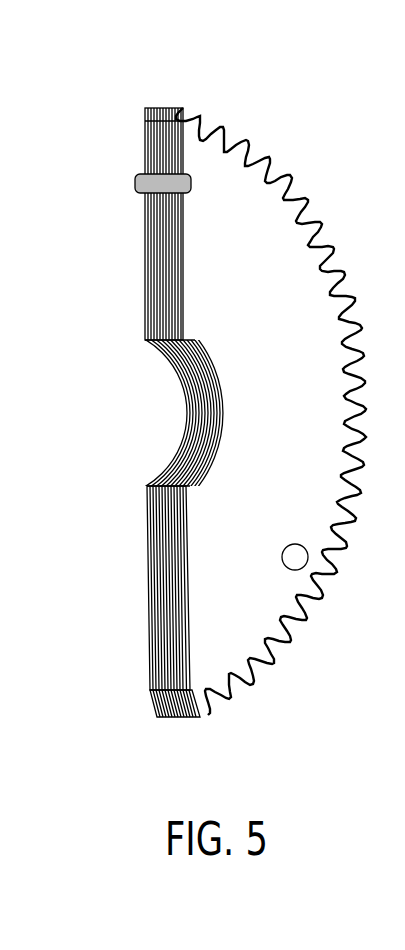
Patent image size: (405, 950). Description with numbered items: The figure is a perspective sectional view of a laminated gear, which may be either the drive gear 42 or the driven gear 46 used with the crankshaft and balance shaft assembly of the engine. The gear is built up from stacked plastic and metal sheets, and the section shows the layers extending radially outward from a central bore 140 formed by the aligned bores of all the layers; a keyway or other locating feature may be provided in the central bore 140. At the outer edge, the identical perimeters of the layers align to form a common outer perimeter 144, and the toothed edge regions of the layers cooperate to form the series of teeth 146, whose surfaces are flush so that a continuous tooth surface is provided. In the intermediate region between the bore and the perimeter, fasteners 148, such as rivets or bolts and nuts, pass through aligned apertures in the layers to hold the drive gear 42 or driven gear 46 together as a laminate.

The central bore 140 is at (165, 478).
The common outer perimeter 144 is at (271, 429).
The series of teeth 146 is at (271, 444).
The drive gear 42 is at (271, 444).
The driven gear 46 is at (256, 712).
The fasteners 148 is at (135, 183).